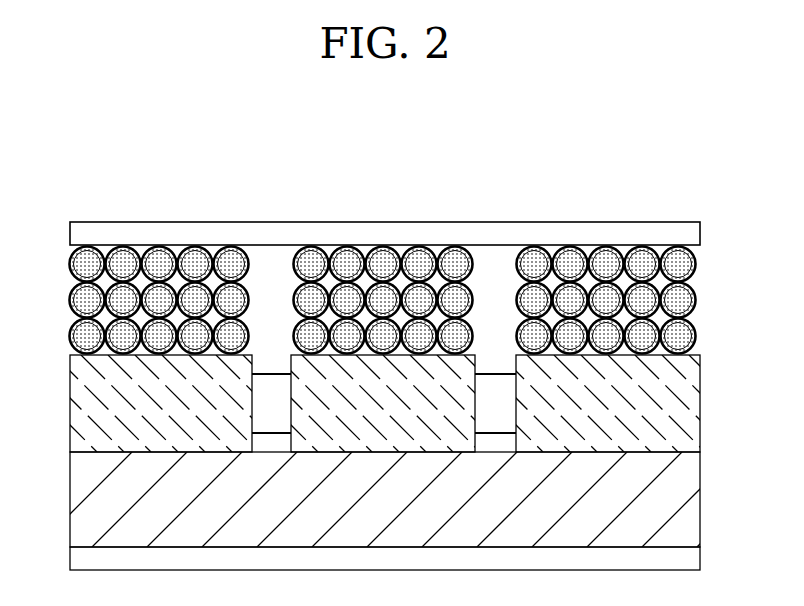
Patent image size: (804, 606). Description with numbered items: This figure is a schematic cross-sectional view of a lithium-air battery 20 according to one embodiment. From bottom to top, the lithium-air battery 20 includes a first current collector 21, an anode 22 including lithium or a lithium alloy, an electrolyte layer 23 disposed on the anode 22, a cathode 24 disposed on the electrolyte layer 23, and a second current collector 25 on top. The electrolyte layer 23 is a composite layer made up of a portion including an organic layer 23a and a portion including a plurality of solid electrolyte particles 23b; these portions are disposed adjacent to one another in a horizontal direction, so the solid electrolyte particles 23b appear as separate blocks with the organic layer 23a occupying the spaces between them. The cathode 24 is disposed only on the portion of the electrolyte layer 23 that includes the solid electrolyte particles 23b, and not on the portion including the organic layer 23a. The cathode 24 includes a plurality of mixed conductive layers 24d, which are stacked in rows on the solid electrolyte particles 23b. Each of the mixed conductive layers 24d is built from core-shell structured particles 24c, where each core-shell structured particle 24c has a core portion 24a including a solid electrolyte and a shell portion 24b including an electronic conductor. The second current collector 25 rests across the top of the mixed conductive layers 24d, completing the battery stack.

The lithium-air battery 20 is at (735, 148).
The first current collector 21 is at (690, 560).
The anode 22 is at (690, 500).
The electrolyte layer 23 is at (402, 403).
The organic layer 23a is at (505, 417).
The solid electrolyte particles 23b is at (690, 402).
The cathode 24 is at (383, 260).
The core portion 24a is at (383, 258).
The shell portion 24b is at (383, 258).
The core-shell structured particle 24c is at (383, 258).
The mixed conductive layers 24d is at (145, 246).
The second current collector 25 is at (687, 233).